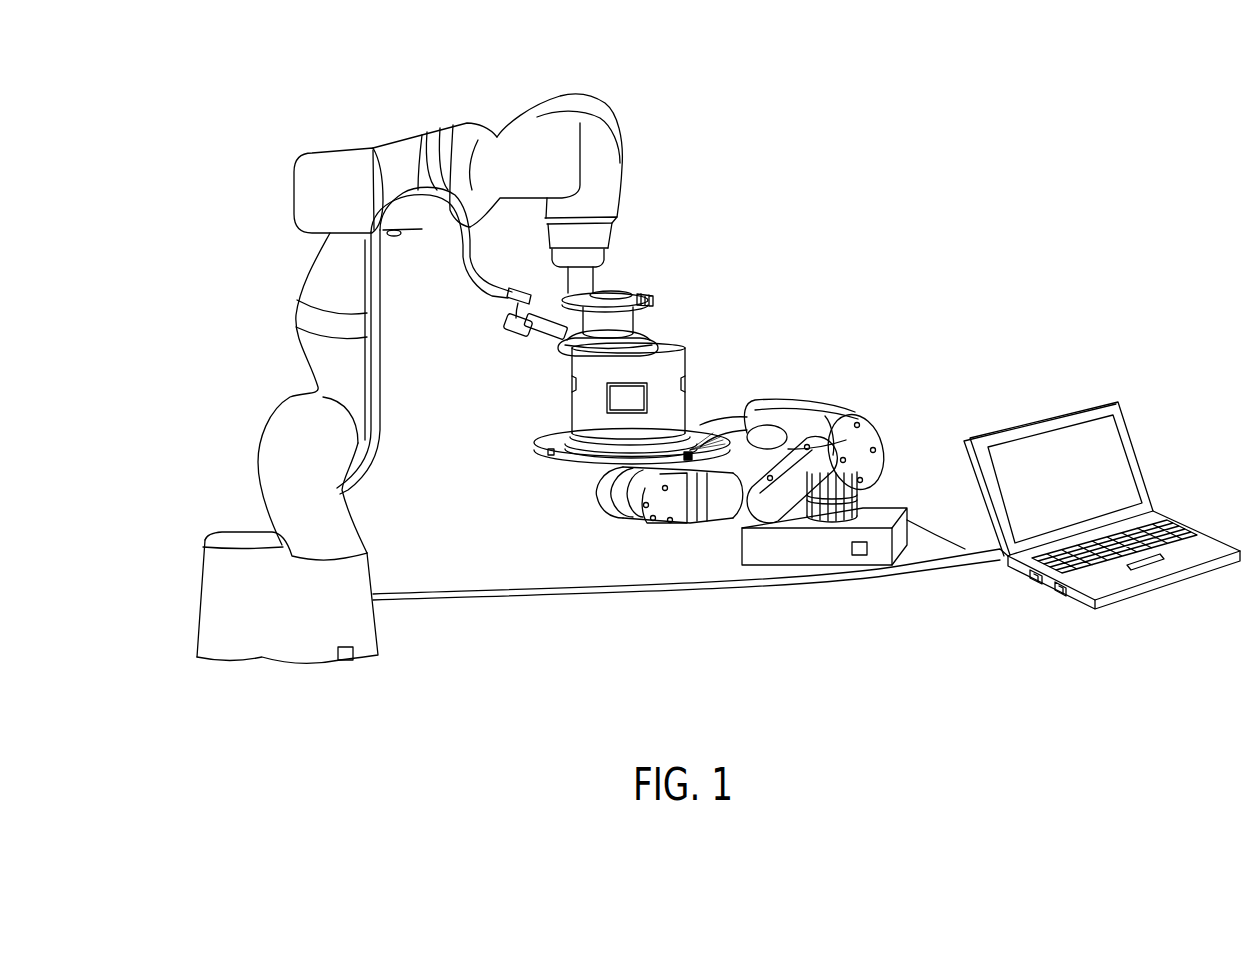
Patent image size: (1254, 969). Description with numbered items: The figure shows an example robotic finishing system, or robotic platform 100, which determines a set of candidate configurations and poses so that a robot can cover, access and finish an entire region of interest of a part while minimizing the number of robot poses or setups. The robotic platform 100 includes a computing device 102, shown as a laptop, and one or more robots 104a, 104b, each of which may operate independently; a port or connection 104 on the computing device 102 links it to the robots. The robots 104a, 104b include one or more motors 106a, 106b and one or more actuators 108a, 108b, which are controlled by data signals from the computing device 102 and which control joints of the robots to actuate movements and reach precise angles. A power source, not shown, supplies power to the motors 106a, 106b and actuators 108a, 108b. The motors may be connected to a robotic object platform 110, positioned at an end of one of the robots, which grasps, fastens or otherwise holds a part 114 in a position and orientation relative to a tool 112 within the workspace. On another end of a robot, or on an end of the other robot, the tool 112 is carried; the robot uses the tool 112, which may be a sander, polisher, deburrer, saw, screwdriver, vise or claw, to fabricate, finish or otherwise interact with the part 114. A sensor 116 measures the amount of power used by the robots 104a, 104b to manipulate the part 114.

The robotic finishing system 100 is at (222, 165).
The computing device 102 is at (1034, 582).
The robot 104 is at (1060, 591).
The first robot 104a is at (164, 190).
The second robot 104b is at (935, 657).
The motor 106a is at (580, 112).
The motor 106b is at (863, 450).
The actuator 108a is at (343, 170).
The actuator 108b is at (820, 523).
The robotic object platform 110 is at (573, 463).
The tool 112 is at (637, 340).
The part 114 is at (673, 363).
The sensor 116 is at (345, 662).